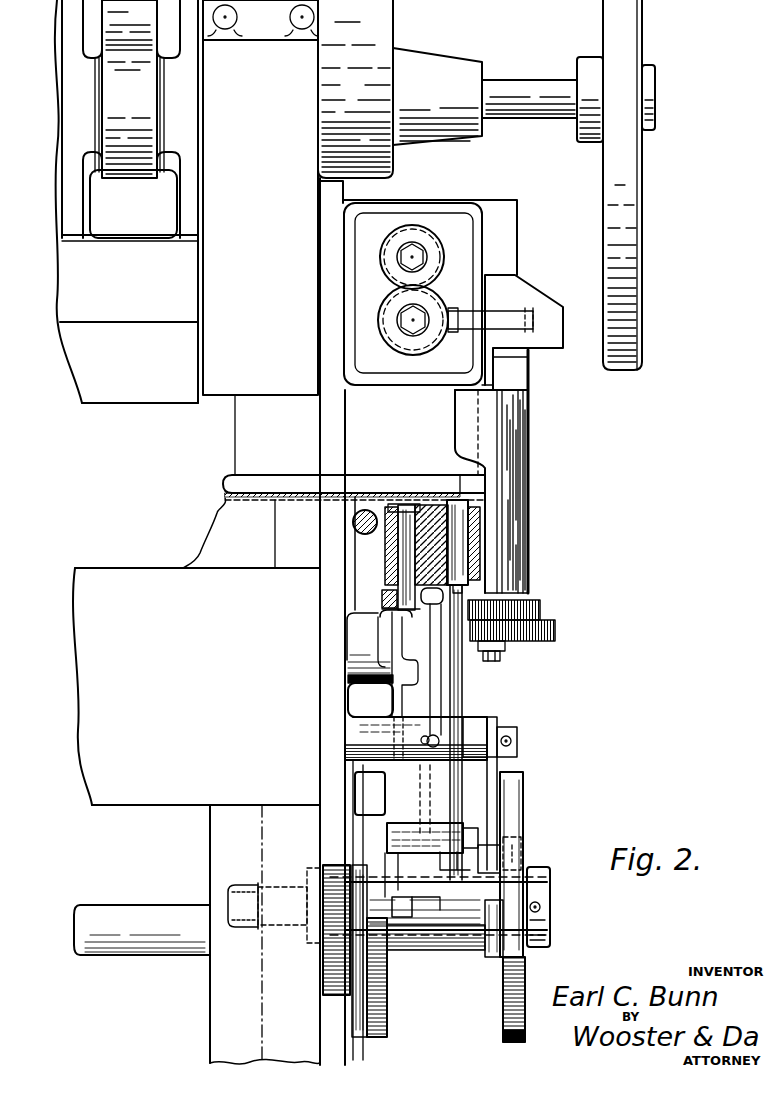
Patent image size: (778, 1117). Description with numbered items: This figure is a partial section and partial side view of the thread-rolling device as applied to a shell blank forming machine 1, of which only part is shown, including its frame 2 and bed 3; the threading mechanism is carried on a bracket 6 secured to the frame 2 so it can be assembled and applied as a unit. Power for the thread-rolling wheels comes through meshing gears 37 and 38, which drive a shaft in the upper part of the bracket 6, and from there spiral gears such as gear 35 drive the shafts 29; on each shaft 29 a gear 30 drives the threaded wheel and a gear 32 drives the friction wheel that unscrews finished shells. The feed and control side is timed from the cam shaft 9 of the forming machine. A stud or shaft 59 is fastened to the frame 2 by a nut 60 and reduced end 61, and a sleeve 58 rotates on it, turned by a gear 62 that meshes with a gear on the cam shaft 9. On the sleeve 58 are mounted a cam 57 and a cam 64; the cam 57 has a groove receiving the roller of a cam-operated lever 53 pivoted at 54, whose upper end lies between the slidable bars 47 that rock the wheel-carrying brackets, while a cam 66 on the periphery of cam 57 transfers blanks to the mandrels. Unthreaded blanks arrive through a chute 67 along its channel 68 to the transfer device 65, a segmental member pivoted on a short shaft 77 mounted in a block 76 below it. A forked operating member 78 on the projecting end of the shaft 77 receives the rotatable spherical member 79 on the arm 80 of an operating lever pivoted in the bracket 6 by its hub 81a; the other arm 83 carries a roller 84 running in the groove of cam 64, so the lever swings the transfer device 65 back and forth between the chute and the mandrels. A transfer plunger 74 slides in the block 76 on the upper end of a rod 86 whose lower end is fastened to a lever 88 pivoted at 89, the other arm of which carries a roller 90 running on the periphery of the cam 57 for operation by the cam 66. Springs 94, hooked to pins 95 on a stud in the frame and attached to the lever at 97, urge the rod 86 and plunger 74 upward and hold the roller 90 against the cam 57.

The shell blank making or forming machine 1 is at (416, 23).
The frame 2 is at (310, 1045).
The bed 3 is at (125, 576).
The bracket 6 is at (327, 600).
The cam shaft 9 is at (143, 915).
The shafts 29 is at (540, 430).
The gear 30 is at (545, 608).
The gear 32 is at (531, 641).
The spiral gear 35 is at (508, 309).
The gear 37 is at (433, 233).
The gear 38 is at (378, 307).
The slidable bar 47 is at (352, 525).
The cam-operated lever 53 is at (365, 620).
The pivot 54 is at (347, 690).
The cam 57 is at (370, 1037).
The sleeve 58 is at (418, 952).
The stud or shaft 59 is at (445, 952).
The nut 60 is at (245, 930).
The reduced end 61 is at (283, 925).
The gear 62 is at (328, 995).
The cam 64 is at (518, 815).
The transfer device 65 is at (434, 495).
The cam 66 is at (377, 1005).
The chute 67 is at (250, 476).
The channel 68 is at (262, 483).
The transfer plunger 74 is at (462, 530).
The block 76 is at (480, 550).
The short shaft 77 is at (400, 556).
The forked operating member 78 is at (390, 612).
The rotatable spherical member 79 is at (427, 612).
The arm 80 is at (448, 703).
The hub 81a is at (484, 723).
The arm 83 is at (487, 797).
The roller 84 is at (527, 843).
The rod 86 is at (463, 688).
The lever 88 is at (397, 897).
The pivot 89 is at (447, 830).
The roller 90 is at (407, 917).
The springs 94 is at (437, 794).
The pins 95 is at (427, 740).
The spring connection 97 is at (428, 902).